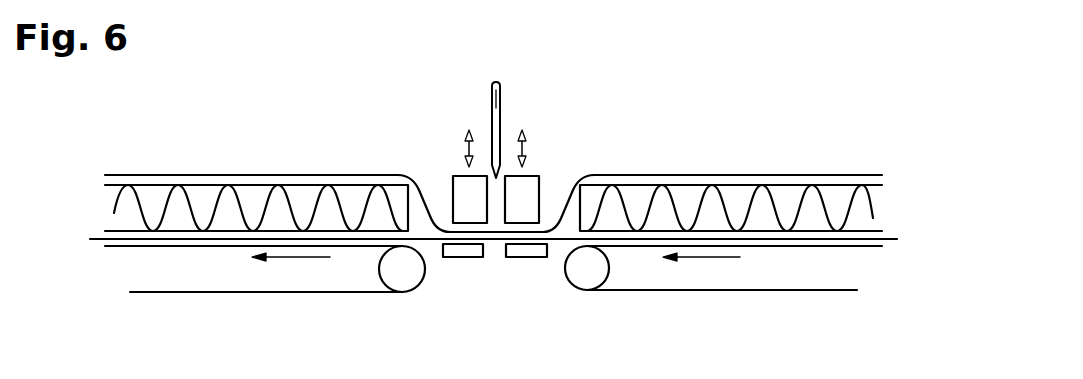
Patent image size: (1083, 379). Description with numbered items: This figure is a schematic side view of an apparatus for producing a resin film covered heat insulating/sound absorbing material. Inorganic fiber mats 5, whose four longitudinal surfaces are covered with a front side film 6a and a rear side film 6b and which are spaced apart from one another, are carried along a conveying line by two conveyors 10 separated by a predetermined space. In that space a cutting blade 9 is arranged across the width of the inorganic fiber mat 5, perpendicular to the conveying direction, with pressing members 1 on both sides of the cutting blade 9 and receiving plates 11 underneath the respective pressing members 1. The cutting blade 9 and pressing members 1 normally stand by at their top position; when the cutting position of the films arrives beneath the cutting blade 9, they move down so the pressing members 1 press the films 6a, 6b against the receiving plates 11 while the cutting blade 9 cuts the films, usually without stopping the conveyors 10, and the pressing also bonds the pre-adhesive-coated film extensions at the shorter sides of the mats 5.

The pressing member 1 is at (463, 193).
The inorganic fiber mat 5 is at (280, 200).
The front side film 6a is at (672, 174).
The rear side film 6b is at (893, 237).
The cutting blade 9 is at (500, 95).
The conveyor 10 is at (218, 271).
The receiving plate 11 is at (527, 250).